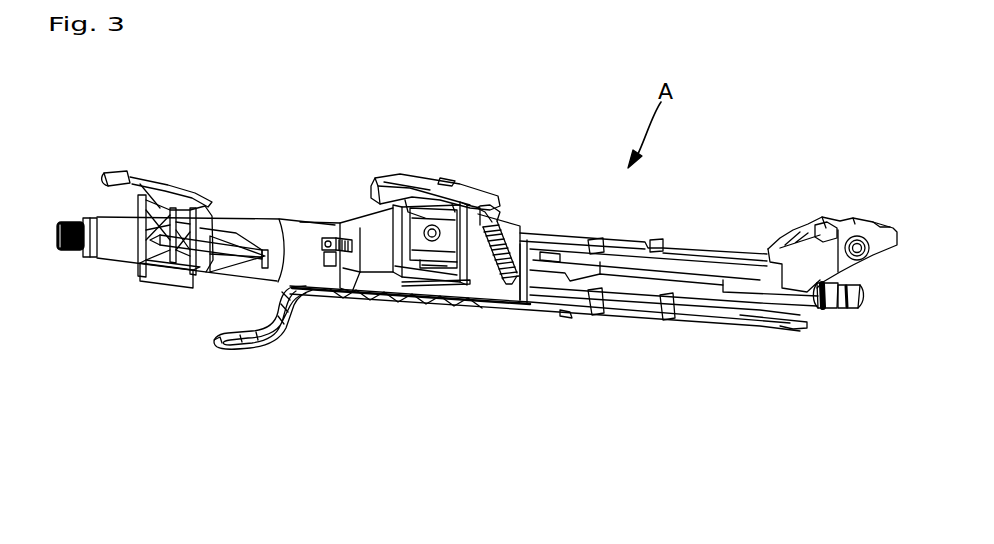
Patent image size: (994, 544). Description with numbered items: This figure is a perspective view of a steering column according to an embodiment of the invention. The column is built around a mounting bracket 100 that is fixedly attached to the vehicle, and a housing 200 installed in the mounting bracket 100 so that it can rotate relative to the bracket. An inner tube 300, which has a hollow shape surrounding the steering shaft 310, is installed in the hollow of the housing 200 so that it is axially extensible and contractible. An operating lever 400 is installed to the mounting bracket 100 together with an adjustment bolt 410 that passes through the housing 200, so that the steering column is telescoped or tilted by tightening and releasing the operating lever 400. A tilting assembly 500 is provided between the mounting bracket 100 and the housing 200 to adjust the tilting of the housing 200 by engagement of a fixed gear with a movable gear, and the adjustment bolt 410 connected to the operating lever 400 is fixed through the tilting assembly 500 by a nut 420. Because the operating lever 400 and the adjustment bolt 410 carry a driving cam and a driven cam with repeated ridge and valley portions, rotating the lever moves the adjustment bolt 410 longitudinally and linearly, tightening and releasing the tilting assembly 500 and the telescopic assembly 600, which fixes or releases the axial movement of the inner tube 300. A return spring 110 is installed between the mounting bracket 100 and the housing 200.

The mounting bracket 100 is at (470, 214).
The return spring 110 is at (500, 237).
The housing 200 is at (557, 320).
The inner tube 300 is at (300, 272).
The steering shaft 310 is at (112, 252).
The operating lever 400 is at (240, 347).
The adjustment bolt 410 is at (440, 212).
The nut 420 is at (410, 176).
The tilting assembly 500 is at (443, 273).
The telescopic assembly 600 is at (318, 248).